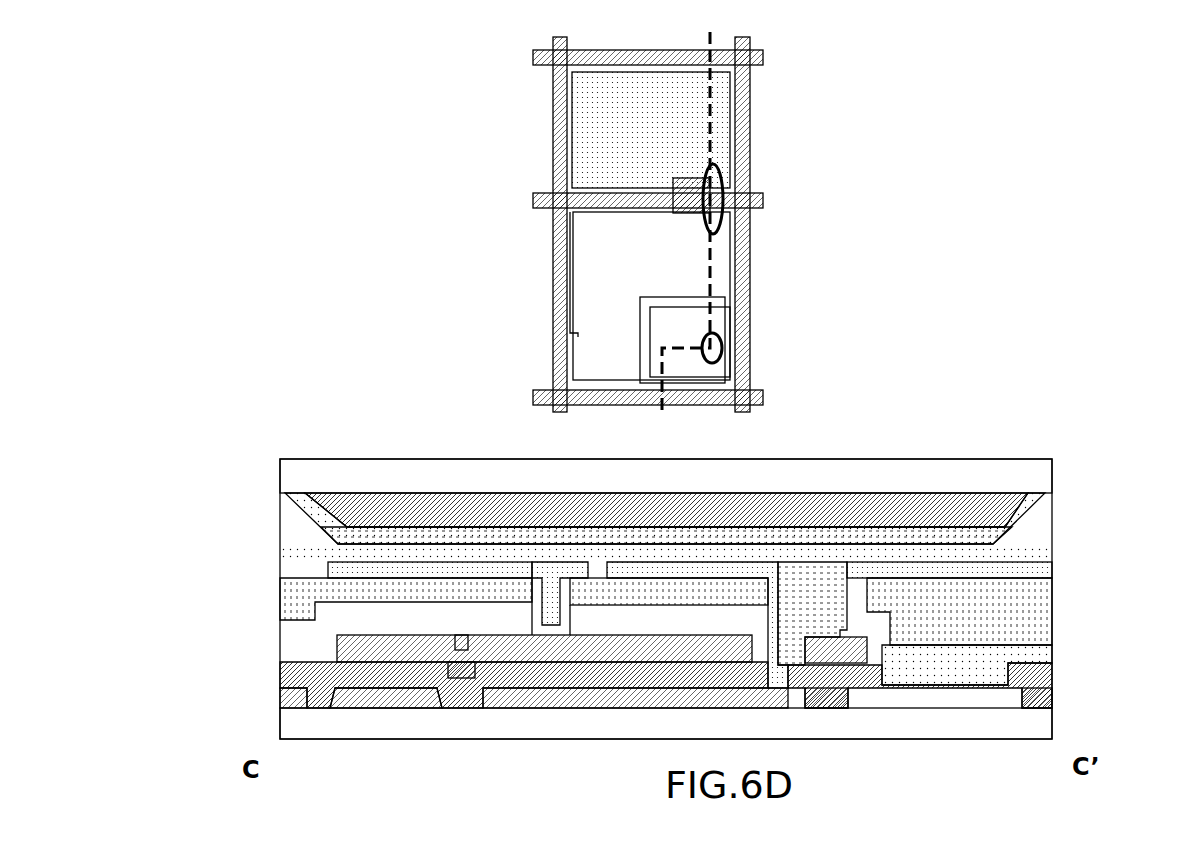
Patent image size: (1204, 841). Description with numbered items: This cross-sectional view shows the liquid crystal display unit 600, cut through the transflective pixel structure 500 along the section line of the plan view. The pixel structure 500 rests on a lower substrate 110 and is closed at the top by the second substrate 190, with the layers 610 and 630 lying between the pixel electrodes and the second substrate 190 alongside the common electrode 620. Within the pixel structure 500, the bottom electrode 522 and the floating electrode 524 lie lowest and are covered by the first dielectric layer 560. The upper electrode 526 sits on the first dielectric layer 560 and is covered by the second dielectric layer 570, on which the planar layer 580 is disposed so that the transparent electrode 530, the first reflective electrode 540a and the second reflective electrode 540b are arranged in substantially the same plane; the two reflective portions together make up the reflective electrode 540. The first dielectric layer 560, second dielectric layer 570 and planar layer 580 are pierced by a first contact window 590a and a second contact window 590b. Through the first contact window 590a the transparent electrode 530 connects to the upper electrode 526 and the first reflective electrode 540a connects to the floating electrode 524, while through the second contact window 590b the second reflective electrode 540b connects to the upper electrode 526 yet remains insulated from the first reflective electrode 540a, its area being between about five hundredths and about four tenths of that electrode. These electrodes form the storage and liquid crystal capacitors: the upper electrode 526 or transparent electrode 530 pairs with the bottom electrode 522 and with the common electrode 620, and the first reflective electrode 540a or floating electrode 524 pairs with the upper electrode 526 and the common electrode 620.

The substrate 110 is at (335, 722).
The second substrate 190 is at (993, 482).
The transflective pixel structure 500 is at (496, 398).
The bottom electrode 522 is at (390, 697).
The floating electrode 524 is at (742, 700).
The upper electrode 526 is at (405, 645).
The transparent electrode 530 is at (588, 127).
The pixel electrode 540 is at (598, 275).
The first reflective electrode 540a is at (650, 568).
The second reflective electrode 540b is at (363, 578).
The first dielectric layer 560 is at (1027, 677).
The second dielectric layer 570 is at (1013, 655).
The planar layer 580 is at (1013, 603).
The first contact window 590a is at (720, 178).
The second contact window 590b is at (718, 346).
The liquid crystal display unit 600 is at (358, 785).
The overcoat layer 610 is at (1040, 523).
The common electrode 620 is at (355, 533).
The black matrix 630 is at (380, 507).